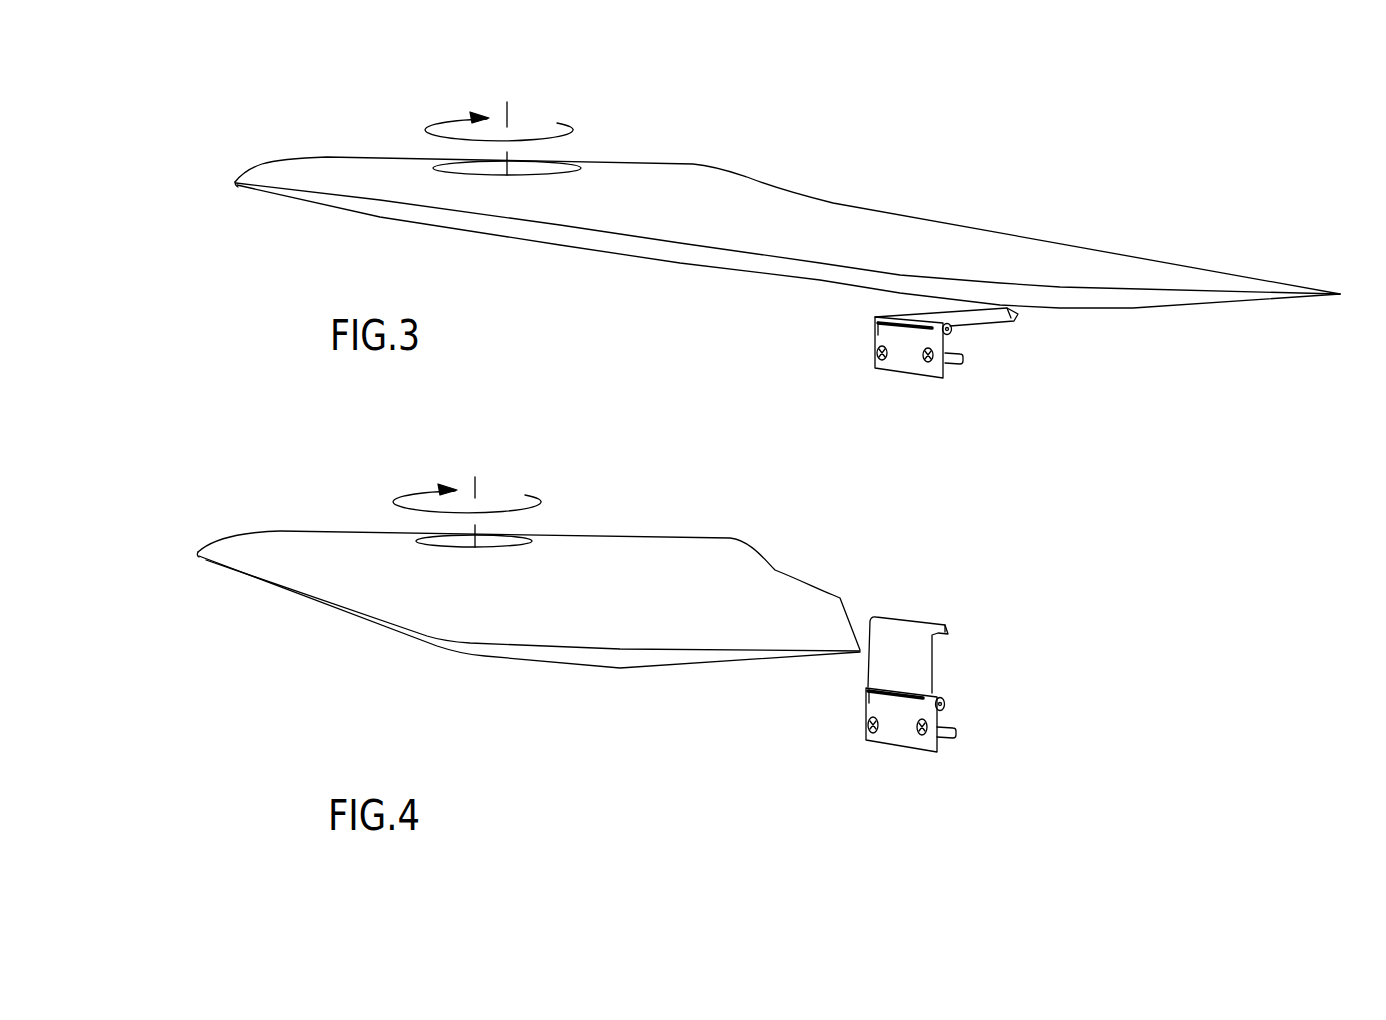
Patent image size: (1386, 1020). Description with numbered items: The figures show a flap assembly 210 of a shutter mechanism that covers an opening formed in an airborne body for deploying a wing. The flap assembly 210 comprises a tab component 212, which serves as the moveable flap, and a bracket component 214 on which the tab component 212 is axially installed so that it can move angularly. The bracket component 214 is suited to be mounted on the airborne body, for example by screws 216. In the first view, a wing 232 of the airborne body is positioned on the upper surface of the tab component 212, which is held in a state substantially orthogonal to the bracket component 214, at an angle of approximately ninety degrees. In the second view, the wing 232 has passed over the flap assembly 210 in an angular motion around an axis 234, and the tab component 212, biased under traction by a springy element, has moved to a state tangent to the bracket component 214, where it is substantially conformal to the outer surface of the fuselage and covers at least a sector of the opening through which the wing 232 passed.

In FIG. 3, the flap assembly 210 is at (956, 385).
In FIG. 4, the flap assembly 210 is at (938, 729).
In FIG. 3, the tab component 212 is at (987, 323).
In FIG. 4, the tab component 212 is at (940, 663).
In FIG. 3, the bracket component 214 is at (902, 362).
In FIG. 4, the bracket component 214 is at (895, 732).
In FIG. 3, the screws 216 is at (962, 366).
In FIG. 4, the screws 216 is at (952, 742).
In FIG. 3, the wing 232 is at (828, 223).
In FIG. 4, the wing 232 is at (650, 563).
In FIG. 3, the axis 234 is at (513, 115).
In FIG. 4, the axis 234 is at (480, 488).